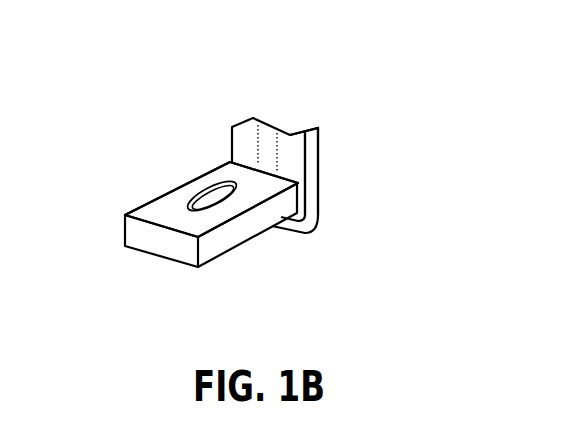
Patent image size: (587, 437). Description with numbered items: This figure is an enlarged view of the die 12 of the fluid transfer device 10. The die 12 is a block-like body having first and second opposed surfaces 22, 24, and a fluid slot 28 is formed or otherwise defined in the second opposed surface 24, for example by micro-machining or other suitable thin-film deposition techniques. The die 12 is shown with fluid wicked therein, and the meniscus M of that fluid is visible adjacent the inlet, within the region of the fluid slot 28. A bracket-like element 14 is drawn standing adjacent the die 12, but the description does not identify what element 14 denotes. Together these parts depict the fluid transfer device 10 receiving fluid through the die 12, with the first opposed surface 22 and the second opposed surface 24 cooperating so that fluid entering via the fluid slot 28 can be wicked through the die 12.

The fluid transfer device 10 is at (320, 97).
The die 12 is at (277, 239).
The bracket arm 14 is at (313, 160).
The first opposed surface 22 is at (147, 255).
The second opposed surface 24 is at (217, 218).
The fluid slot 28 is at (213, 200).
The meniscus M is at (197, 206).